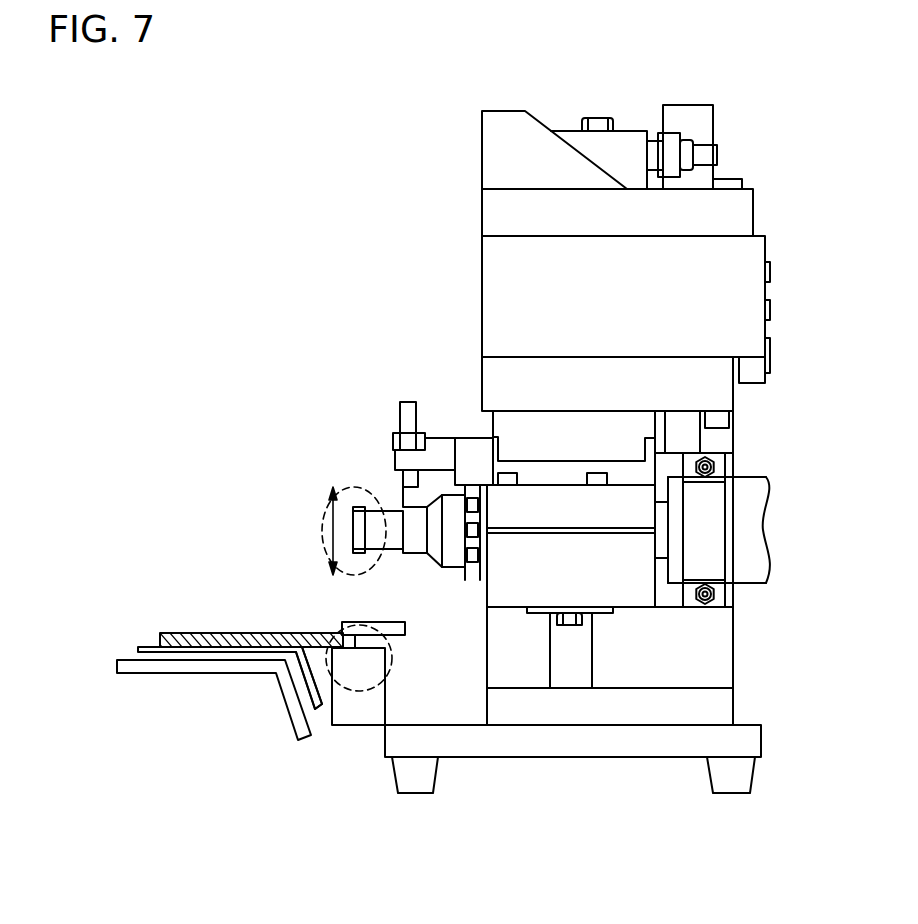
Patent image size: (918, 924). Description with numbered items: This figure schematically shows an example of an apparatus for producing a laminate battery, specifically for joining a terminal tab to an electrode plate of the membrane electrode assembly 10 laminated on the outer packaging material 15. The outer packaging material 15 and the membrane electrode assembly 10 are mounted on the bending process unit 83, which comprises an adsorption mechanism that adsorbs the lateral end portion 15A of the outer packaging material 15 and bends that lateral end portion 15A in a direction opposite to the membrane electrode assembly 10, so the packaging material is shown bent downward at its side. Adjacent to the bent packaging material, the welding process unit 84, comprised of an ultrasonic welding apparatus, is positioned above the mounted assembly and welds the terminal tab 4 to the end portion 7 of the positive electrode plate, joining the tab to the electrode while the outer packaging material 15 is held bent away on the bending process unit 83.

The welding process unit 84 is at (353, 487).
The membrane electrode assembly 10 is at (192, 622).
The end portion of the positive electrode plate 7 is at (350, 630).
The terminal tab 4 is at (393, 630).
The outer packaging material 15 is at (137, 650).
The lateral end portion of the outer packaging material 15A is at (312, 702).
The bending process unit 83 is at (155, 670).